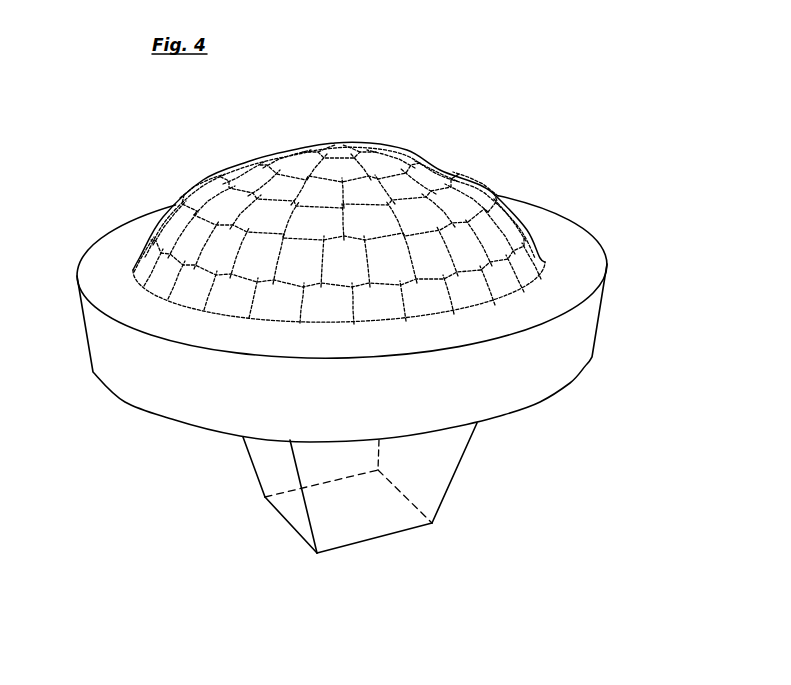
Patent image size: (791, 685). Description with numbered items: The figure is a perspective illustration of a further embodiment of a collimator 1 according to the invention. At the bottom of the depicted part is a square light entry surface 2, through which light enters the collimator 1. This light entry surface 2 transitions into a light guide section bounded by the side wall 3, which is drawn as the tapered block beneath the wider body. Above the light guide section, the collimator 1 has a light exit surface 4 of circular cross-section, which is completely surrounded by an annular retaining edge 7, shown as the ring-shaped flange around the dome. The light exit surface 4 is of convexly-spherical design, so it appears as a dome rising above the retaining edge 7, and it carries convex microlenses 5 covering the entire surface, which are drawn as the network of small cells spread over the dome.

The collimator 1 is at (137, 165).
The light entry surface 2 is at (353, 527).
The side wall 3 is at (465, 452).
The light exit surface 4 is at (392, 136).
The convex microlenses 5 is at (324, 192).
The annular retaining edge 7 is at (580, 318).